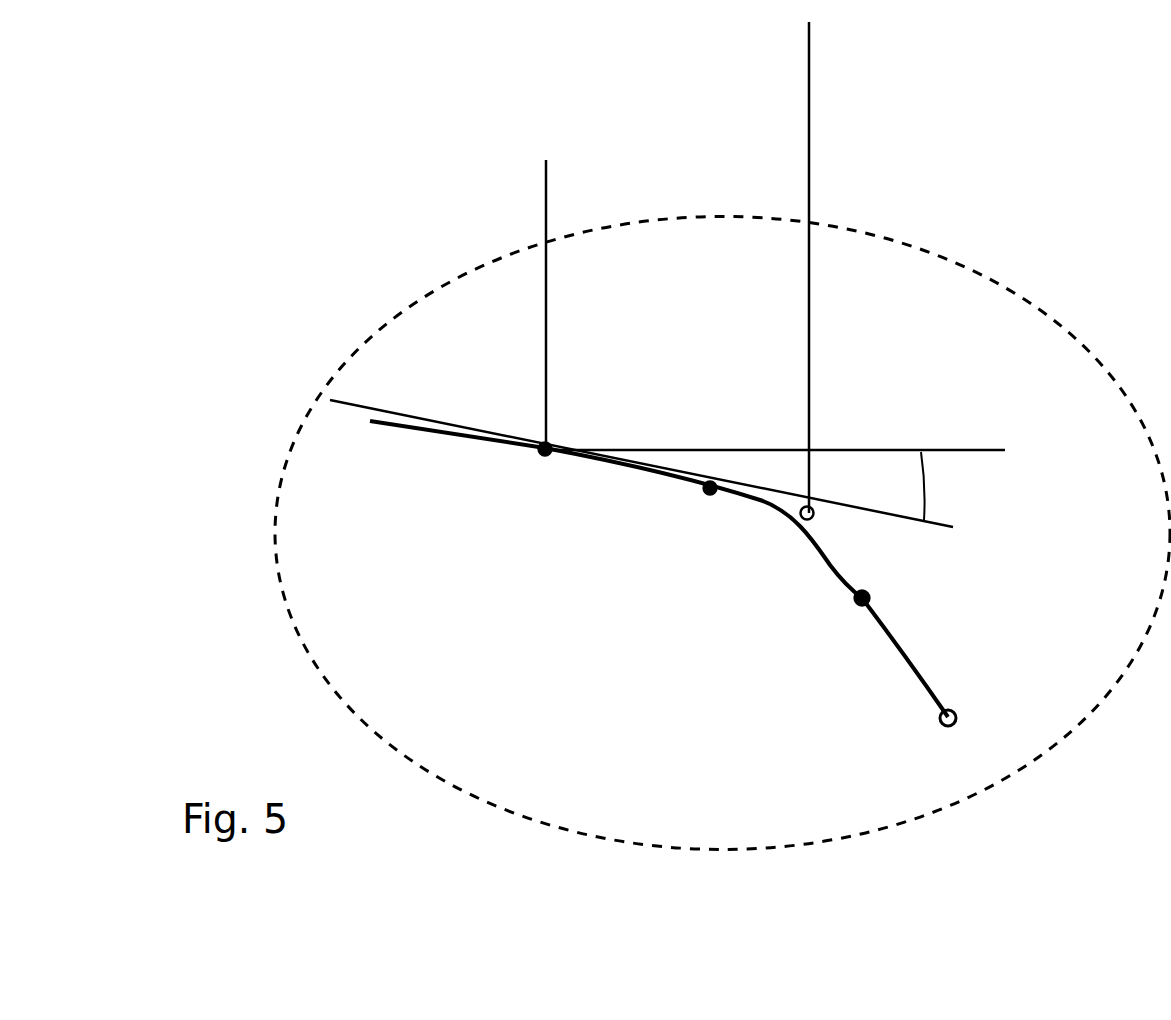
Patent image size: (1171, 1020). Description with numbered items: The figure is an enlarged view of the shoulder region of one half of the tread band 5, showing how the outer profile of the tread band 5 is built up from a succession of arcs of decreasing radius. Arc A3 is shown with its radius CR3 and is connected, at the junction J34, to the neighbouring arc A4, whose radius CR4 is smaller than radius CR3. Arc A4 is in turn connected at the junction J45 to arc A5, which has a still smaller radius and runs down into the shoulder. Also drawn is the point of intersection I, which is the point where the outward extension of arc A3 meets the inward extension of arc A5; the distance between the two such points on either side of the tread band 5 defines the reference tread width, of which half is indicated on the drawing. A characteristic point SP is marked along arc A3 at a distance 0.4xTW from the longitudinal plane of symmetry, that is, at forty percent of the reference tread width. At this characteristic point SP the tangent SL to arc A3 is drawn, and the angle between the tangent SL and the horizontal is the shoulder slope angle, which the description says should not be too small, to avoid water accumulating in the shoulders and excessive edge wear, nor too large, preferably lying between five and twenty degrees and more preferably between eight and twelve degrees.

The tread band 5 is at (682, 296).
The distance equal to 40% of reference tread width 0.4xTW is at (537, 188).
The tangent SL is at (362, 403).
The characteristic point SP is at (548, 444).
The point of intersection I is at (815, 519).
The junction J34 is at (653, 414).
The junction J45 is at (891, 590).
The arc A3 is at (495, 382).
The arc A4 is at (861, 414).
The arc A5 is at (950, 615).
The radius CR3 is at (584, 478).
The radius CR4 is at (786, 548).